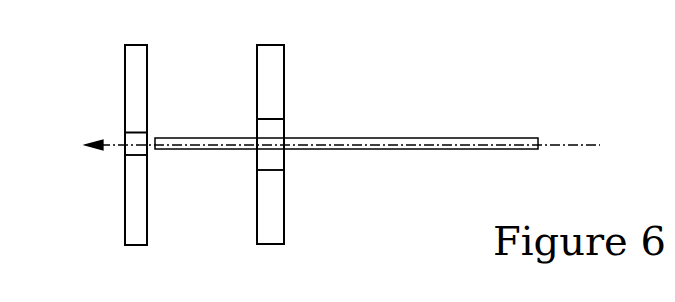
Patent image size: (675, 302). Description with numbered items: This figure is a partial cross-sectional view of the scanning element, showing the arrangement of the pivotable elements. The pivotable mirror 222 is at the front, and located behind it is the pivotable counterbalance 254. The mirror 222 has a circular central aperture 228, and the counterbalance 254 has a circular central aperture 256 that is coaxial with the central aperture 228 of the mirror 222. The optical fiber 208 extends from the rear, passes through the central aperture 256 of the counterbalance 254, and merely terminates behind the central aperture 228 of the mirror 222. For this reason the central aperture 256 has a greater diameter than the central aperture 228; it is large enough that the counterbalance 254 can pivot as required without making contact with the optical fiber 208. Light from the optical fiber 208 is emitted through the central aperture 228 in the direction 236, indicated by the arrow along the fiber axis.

The mirror 222 is at (125, 72).
The central aperture 228 is at (134, 158).
The counterbalance 254 is at (284, 72).
The central aperture 256 is at (272, 170).
The optical fiber 208 is at (398, 152).
The direction 236 is at (103, 152).